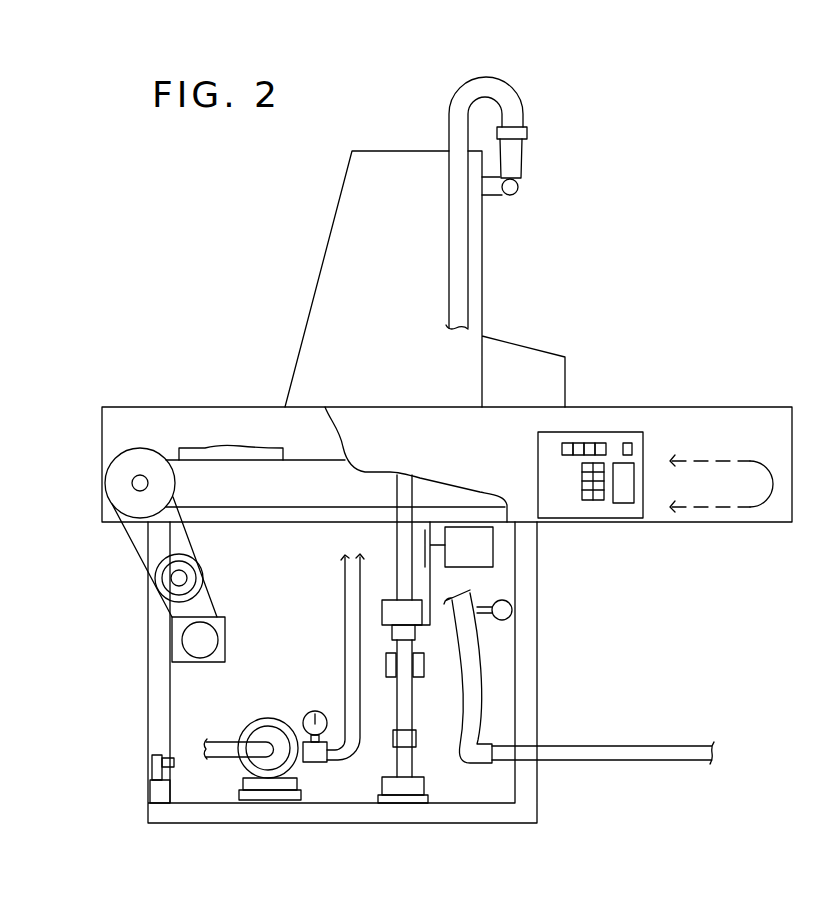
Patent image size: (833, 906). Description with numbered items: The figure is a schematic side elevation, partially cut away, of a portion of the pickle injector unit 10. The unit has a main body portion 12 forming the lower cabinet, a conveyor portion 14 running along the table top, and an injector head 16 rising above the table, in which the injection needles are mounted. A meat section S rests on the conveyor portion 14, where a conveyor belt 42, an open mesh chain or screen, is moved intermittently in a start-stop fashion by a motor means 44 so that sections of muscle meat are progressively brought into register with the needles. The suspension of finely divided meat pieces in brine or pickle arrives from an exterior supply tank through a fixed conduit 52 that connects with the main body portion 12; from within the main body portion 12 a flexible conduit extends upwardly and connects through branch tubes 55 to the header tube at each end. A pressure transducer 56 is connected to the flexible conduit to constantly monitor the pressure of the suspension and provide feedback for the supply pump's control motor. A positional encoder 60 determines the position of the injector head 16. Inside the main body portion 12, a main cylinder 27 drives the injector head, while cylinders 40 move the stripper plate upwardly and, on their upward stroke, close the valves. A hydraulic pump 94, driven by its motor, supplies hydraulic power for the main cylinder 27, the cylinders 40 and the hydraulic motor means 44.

The pickle injector unit 10 is at (572, 604).
The main body portion 12 is at (152, 625).
The conveyor portion 14 is at (188, 426).
The injector head 16 is at (308, 227).
The main cylinder 27 is at (418, 752).
The cylinders 40 is at (402, 693).
The conveyor belt 42 is at (307, 458).
The motor means 44 is at (203, 640).
The fixed conduit 52 is at (648, 746).
The branch tubes 55 is at (520, 190).
The pressure transducer 56 is at (512, 610).
The positional encoder 60 is at (485, 550).
The pump 94 is at (255, 748).
The workpiece S is at (232, 447).